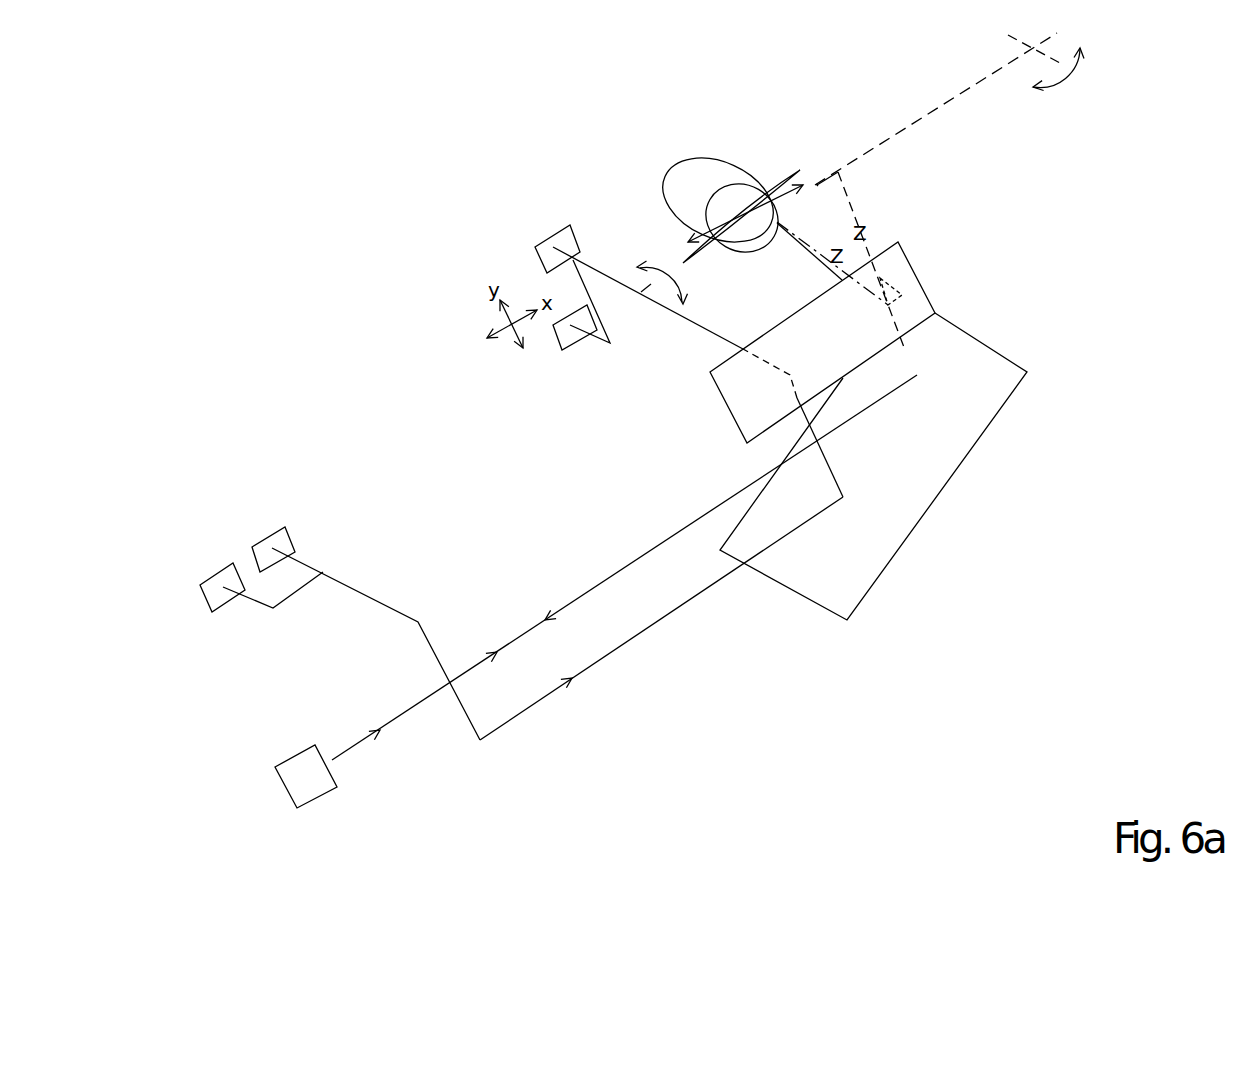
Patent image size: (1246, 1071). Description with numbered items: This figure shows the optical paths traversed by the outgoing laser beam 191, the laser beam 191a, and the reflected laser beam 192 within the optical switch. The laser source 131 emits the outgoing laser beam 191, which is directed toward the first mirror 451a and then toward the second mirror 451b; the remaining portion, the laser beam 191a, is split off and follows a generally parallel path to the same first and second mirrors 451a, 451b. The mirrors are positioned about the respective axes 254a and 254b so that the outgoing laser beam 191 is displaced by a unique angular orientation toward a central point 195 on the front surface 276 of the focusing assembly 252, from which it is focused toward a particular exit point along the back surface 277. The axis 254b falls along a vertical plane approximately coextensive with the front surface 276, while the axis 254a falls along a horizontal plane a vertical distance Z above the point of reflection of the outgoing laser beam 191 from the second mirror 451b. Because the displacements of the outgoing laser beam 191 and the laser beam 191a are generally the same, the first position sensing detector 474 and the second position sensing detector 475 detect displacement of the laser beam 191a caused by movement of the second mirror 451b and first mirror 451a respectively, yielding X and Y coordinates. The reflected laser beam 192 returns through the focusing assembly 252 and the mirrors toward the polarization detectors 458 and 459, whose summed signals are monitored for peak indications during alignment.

The laser source 131 is at (283, 796).
The outgoing laser beam 191 is at (378, 730).
The laser beam 191a is at (573, 679).
The reflected laser beam 192 is at (368, 592).
The spot on reflector 195 is at (888, 305).
The focusing assembly 252 is at (715, 182).
The axis 254a is at (1081, 69).
The axis 254b is at (653, 271).
The front surface 276 is at (773, 242).
The back surface 277 is at (672, 168).
The first mirror 451a is at (884, 572).
The second mirror 451b is at (910, 262).
The polarization detector 458 is at (268, 533).
The polarization detector 459 is at (220, 572).
The first position sensing detector 474 is at (550, 238).
The second position sensing detector 475 is at (572, 348).